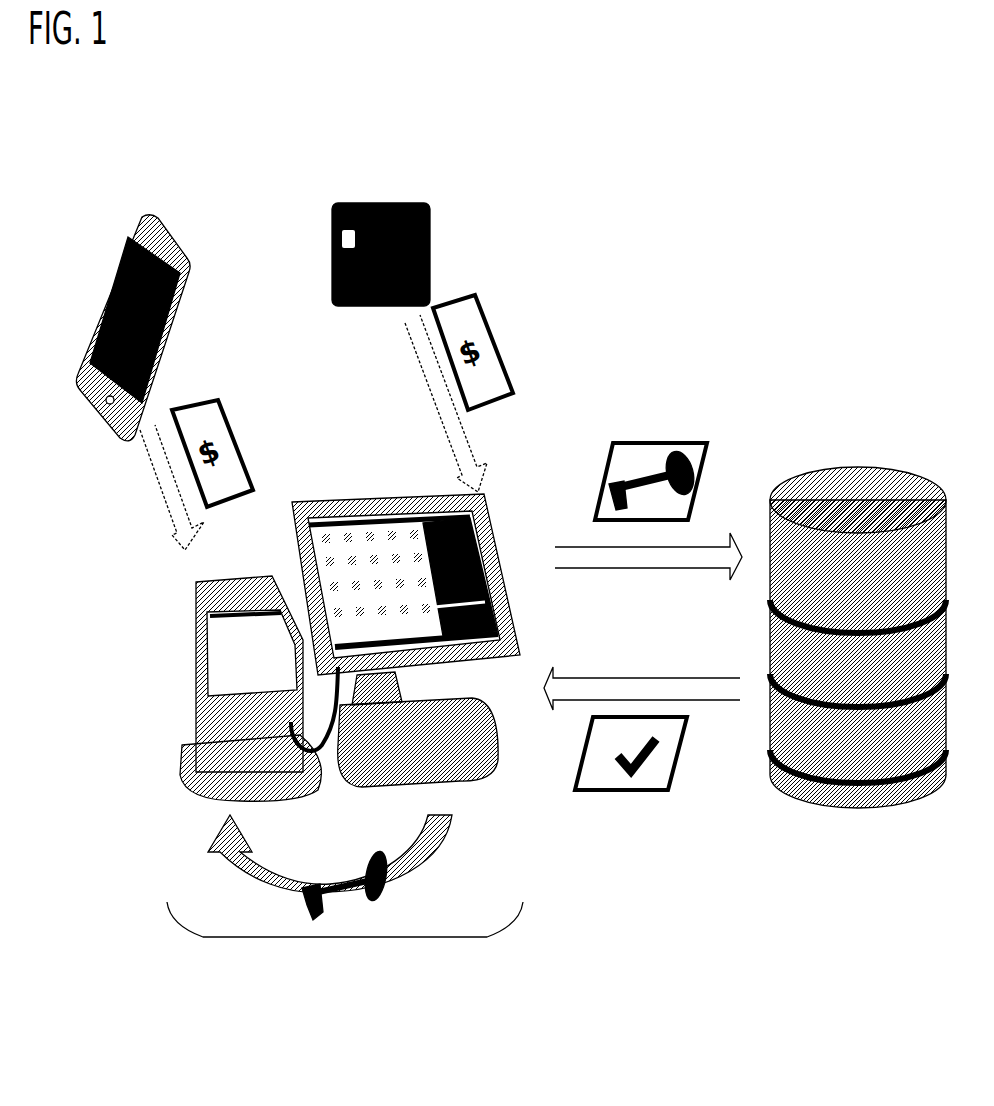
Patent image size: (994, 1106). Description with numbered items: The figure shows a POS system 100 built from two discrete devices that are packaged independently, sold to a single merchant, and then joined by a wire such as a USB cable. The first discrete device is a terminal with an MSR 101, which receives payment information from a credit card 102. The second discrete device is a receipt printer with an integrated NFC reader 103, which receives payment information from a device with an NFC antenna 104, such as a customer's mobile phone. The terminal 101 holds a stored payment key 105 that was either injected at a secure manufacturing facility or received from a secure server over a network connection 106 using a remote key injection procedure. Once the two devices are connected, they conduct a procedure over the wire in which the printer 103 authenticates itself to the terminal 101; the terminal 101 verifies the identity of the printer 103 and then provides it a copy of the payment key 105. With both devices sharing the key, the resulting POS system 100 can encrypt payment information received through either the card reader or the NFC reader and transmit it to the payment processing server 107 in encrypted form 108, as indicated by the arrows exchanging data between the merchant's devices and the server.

The POS system 100 is at (345, 937).
The terminal with an MSR 101 is at (433, 740).
The credit card 102 is at (492, 249).
The receipt printer with an integrated NFC reader 103 is at (274, 745).
The device with an NFC antenna 104 is at (226, 350).
The payment key 105 is at (357, 862).
The network connection 106 is at (662, 636).
The payment processing server 107 is at (880, 380).
The encrypted form 108 is at (612, 452).